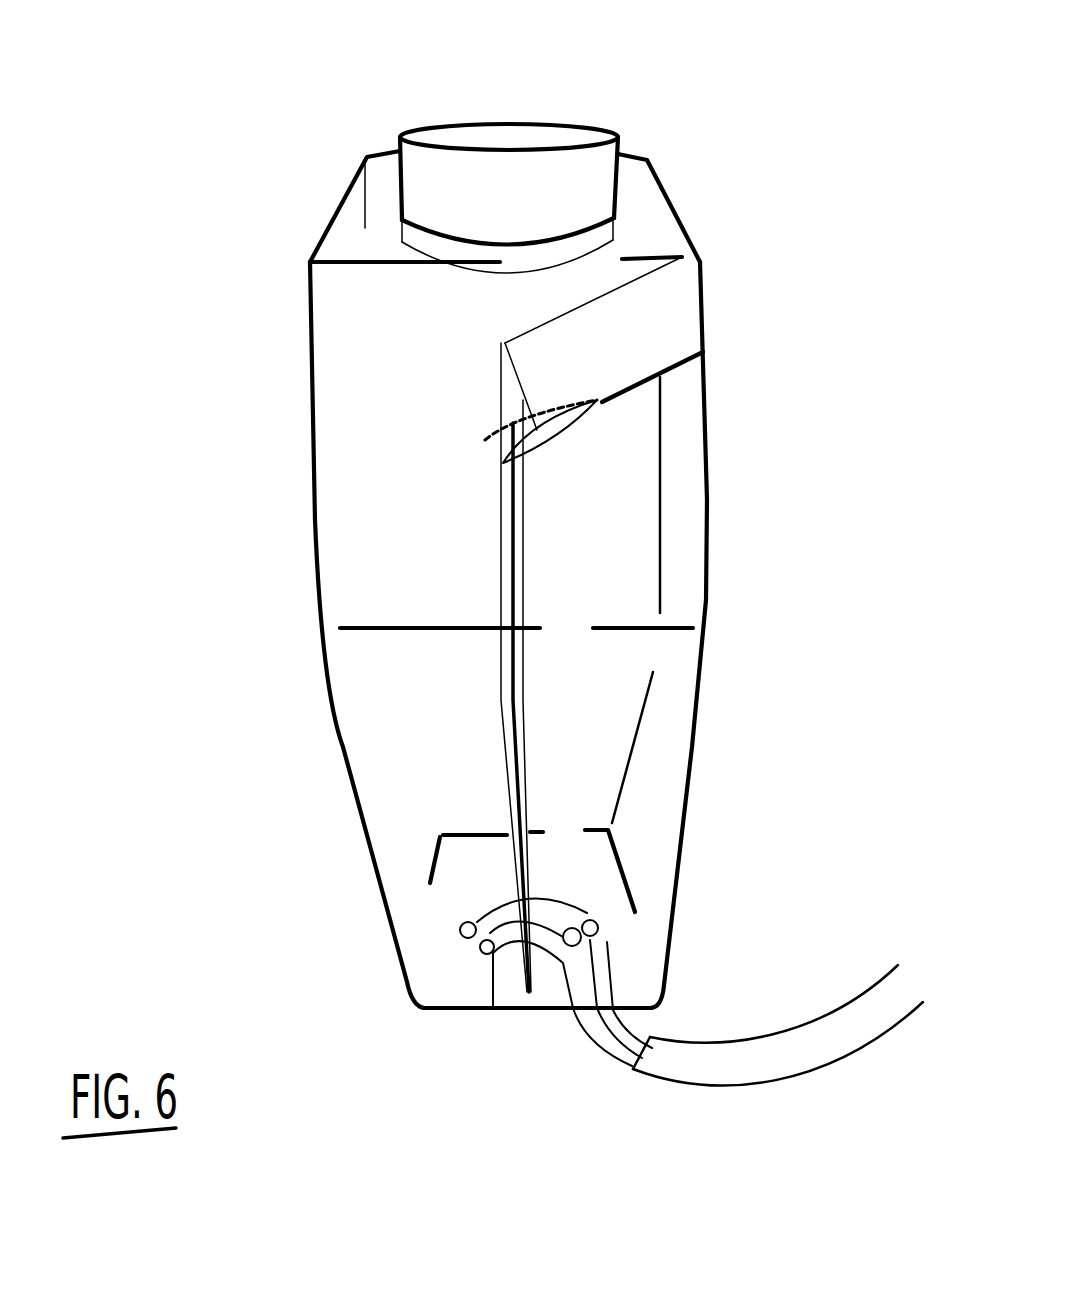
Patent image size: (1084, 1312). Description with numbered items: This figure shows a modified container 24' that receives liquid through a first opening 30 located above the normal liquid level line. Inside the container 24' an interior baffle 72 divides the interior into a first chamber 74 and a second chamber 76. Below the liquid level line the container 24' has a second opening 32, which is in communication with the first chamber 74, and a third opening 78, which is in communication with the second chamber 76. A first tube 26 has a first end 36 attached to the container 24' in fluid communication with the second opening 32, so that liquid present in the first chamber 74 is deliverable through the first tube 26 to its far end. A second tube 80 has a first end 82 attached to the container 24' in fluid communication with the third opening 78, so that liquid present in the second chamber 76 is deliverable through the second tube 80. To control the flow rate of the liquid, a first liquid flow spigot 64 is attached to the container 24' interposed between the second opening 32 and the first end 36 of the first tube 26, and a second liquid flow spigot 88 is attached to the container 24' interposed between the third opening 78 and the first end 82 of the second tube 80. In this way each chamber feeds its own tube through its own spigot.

The modified container 24' is at (626, 579).
The first opening 30 is at (573, 133).
The interior baffle 72 is at (510, 403).
The first chamber 74 is at (400, 522).
The second chamber 76 is at (577, 530).
The first end of second tube 82 is at (583, 910).
The first end of first tube 36 is at (493, 1010).
The first tube 26 is at (580, 1030).
The second tube 80 is at (625, 1028).
The second opening 32 is at (460, 935).
The first liquid flow spigot 64 is at (480, 952).
The third opening 78 is at (597, 928).
The second liquid flow spigot 88 is at (580, 940).